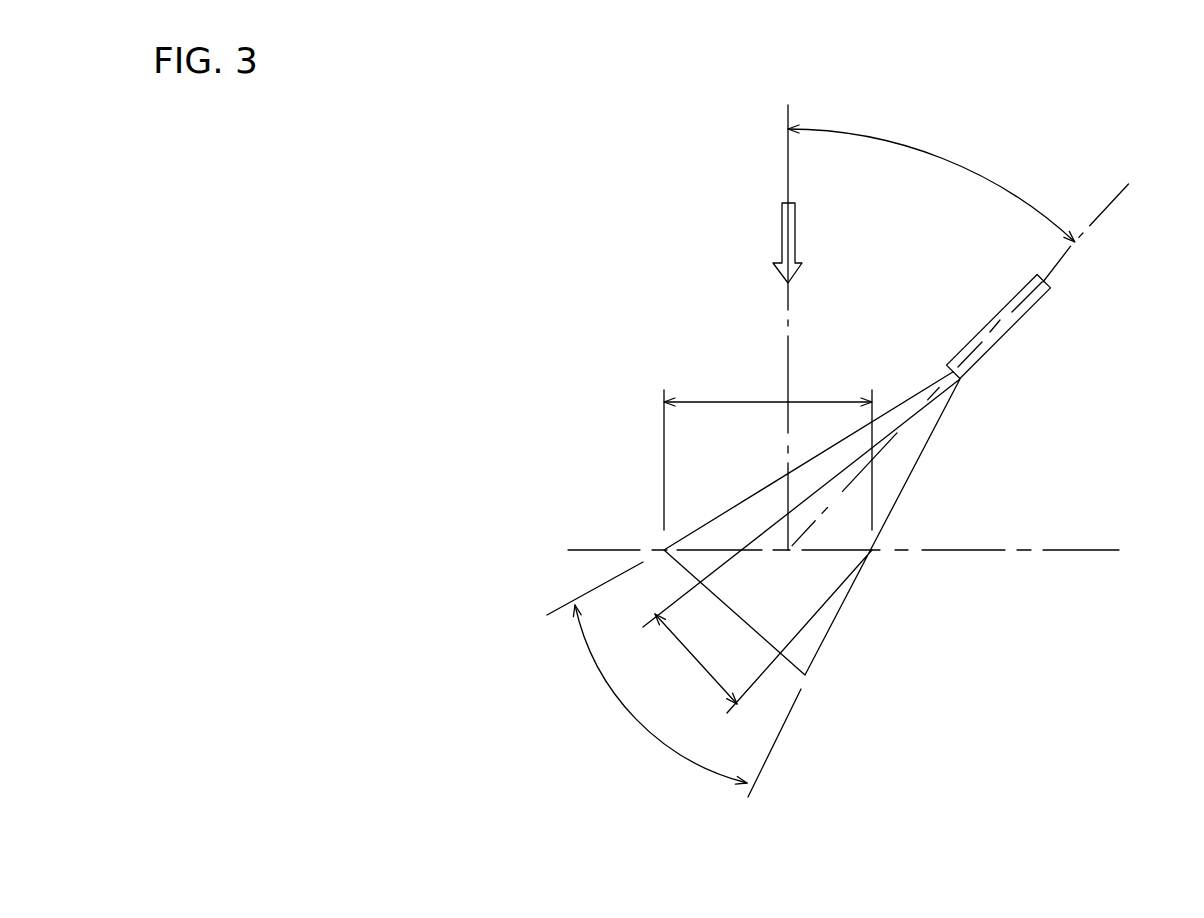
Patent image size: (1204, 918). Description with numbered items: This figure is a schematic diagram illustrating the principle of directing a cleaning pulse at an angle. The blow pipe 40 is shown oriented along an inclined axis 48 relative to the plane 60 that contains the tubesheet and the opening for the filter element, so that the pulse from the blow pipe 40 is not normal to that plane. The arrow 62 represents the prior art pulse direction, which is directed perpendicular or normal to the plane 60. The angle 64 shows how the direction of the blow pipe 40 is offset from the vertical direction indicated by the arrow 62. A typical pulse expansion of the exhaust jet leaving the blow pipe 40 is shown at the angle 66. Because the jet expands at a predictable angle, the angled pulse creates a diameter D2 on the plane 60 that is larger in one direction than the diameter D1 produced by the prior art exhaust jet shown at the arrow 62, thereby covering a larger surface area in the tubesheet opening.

The blow pipe 40 is at (1013, 328).
The sensor axis line 48 is at (1110, 205).
The plane 60 is at (1070, 550).
The arrow 62 is at (796, 226).
The angle 64 is at (960, 158).
The angle of pulse expansion 66 is at (622, 702).
The diameter D1 is at (683, 650).
The diameter D2 is at (715, 402).